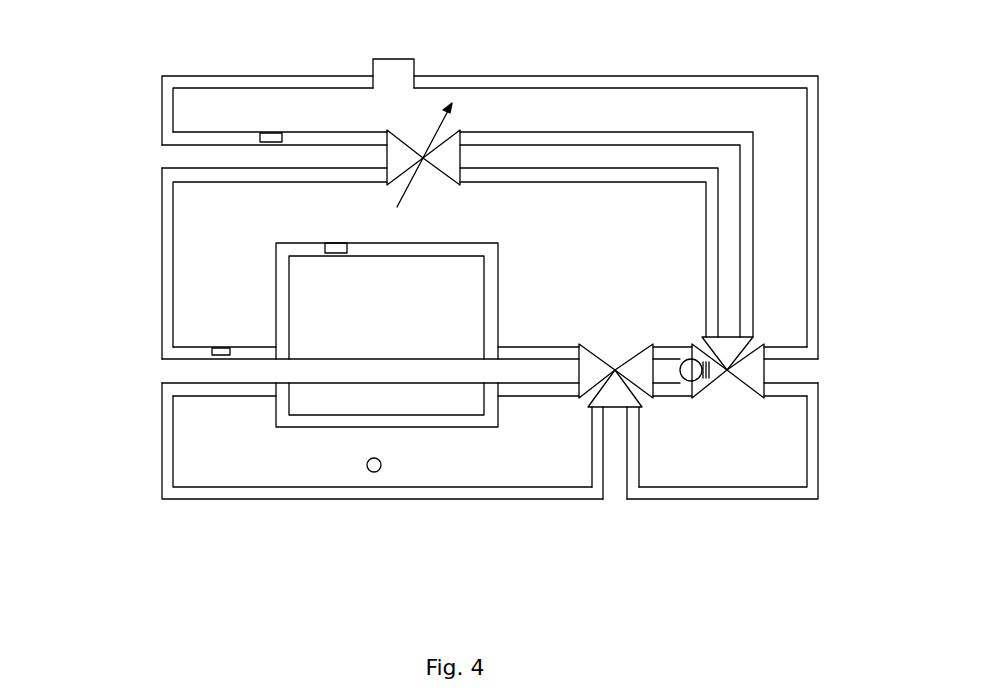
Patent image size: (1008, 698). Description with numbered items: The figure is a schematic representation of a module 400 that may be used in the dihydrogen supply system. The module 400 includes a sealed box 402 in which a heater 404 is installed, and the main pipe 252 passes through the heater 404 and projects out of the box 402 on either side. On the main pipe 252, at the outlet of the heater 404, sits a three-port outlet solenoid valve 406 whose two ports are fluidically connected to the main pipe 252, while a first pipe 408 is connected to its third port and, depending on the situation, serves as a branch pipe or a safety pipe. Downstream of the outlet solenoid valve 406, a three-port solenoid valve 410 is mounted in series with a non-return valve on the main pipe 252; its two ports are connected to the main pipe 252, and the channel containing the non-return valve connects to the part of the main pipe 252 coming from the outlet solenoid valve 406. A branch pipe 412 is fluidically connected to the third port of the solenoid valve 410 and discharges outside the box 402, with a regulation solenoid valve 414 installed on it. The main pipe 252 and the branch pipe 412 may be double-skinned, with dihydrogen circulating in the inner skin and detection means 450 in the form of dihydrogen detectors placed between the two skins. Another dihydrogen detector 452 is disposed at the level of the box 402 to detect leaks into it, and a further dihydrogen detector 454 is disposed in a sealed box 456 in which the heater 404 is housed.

The module 400 is at (132, 100).
The sealed box 402 is at (813, 245).
The heater 404 is at (358, 313).
The three-port solenoid valve 406 is at (615, 370).
The first pipe 408 is at (620, 448).
The solenoid valve in series 410 is at (724, 377).
The branch pipe 412 is at (607, 160).
The regulation solenoid valve 414 is at (428, 163).
The detection means 450 is at (263, 134).
The dihydrogen detector 452 is at (403, 70).
The dihydrogen detector 454 is at (340, 242).
The sealed box 456 is at (276, 285).
The main pipe 252 is at (200, 373).